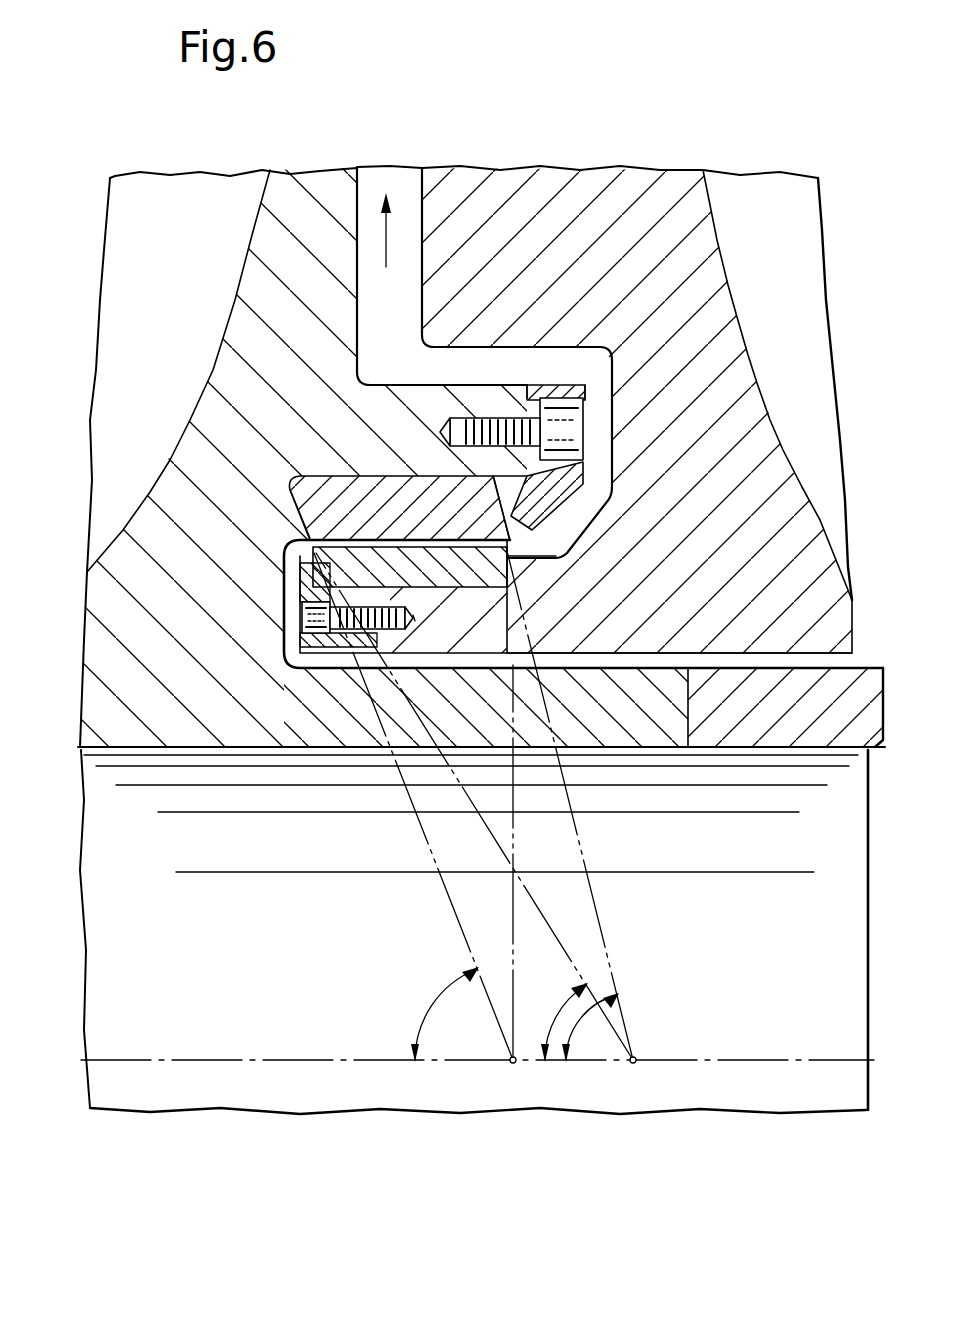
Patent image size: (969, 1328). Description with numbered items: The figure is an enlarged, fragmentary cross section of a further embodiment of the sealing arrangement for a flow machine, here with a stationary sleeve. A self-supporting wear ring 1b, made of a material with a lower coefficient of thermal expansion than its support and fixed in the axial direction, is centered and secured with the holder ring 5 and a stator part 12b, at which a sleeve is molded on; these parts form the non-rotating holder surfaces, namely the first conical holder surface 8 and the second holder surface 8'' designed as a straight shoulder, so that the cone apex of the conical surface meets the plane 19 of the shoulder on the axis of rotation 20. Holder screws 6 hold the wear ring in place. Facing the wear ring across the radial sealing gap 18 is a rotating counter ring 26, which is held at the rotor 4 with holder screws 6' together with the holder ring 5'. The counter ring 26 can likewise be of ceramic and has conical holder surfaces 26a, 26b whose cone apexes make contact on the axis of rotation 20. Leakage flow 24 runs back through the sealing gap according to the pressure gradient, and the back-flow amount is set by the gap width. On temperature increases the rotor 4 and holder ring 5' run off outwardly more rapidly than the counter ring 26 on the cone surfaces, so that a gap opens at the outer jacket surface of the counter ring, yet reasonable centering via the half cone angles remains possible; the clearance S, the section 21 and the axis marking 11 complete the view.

The rotor 4 is at (187, 463).
The leakage flow 24 is at (383, 250).
The stator part 12b is at (655, 183).
The outer wall portion 21 is at (810, 318).
The counter ring 26 is at (352, 498).
The wedge side face 26a is at (297, 515).
The wedge side face 26b is at (500, 508).
The holder screw 6' is at (523, 425).
The holder ring 5' is at (555, 496).
The first conical holder surface 8 is at (504, 700).
The wear ring 1b is at (510, 545).
The holder screw 6 is at (281, 736).
The holder ring 5 is at (359, 739).
The clearance gap S is at (416, 625).
The radial sealing gap 18 is at (495, 570).
The second holder surface 8'' is at (587, 711).
The plane of the second holder surface 19 is at (513, 930).
The axis of rotation 20 is at (261, 1062).
The drum axis 11 is at (626, 1085).